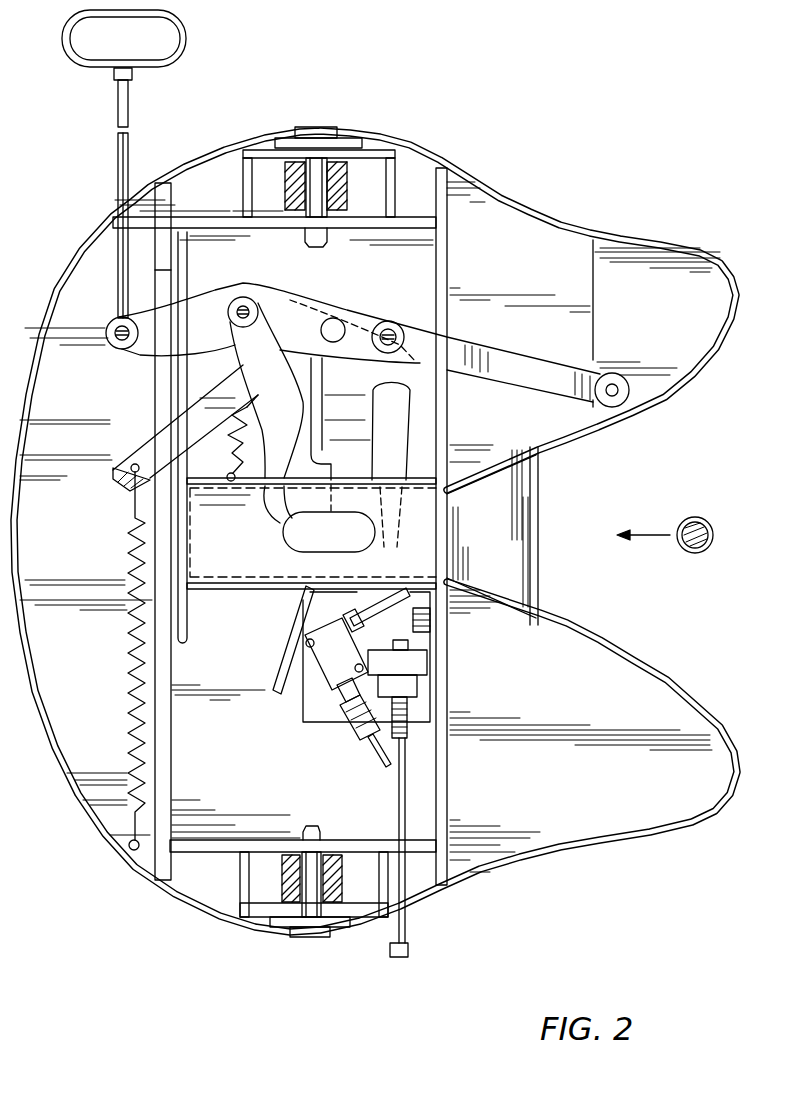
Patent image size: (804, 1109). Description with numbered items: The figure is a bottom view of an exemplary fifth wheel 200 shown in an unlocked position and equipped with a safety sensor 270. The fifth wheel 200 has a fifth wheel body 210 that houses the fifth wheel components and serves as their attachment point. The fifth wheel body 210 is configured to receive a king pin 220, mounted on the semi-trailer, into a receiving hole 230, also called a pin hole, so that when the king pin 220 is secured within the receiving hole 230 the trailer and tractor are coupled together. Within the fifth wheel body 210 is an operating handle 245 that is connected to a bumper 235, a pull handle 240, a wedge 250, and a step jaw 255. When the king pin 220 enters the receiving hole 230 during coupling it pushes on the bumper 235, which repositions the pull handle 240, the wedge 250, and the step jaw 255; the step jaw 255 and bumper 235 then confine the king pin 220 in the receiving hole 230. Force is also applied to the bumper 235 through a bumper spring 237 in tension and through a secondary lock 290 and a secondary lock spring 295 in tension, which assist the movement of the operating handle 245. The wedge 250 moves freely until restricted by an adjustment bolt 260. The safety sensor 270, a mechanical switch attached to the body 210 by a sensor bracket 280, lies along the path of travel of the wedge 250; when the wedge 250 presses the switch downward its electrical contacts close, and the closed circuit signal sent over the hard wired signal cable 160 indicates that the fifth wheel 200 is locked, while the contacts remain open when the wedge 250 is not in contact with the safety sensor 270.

The fifth wheel 200 is at (636, 190).
The fifth wheel body 210 is at (494, 192).
The king pin 220 is at (700, 517).
The receiving hole 230 is at (285, 537).
The bumper 235 is at (273, 455).
The bumper spring 237 is at (273, 453).
The pull handle 240 is at (115, 102).
The operating handle 245 is at (530, 367).
The wedge 250 is at (420, 433).
The step jaw 255 is at (325, 462).
The adjustment bolt 260 is at (410, 950).
The safety sensor 270 is at (405, 598).
The sensor bracket 280 is at (305, 653).
The secondary lock 290 is at (150, 450).
The secondary lock spring 295 is at (130, 703).
The signal cable 160 is at (372, 745).